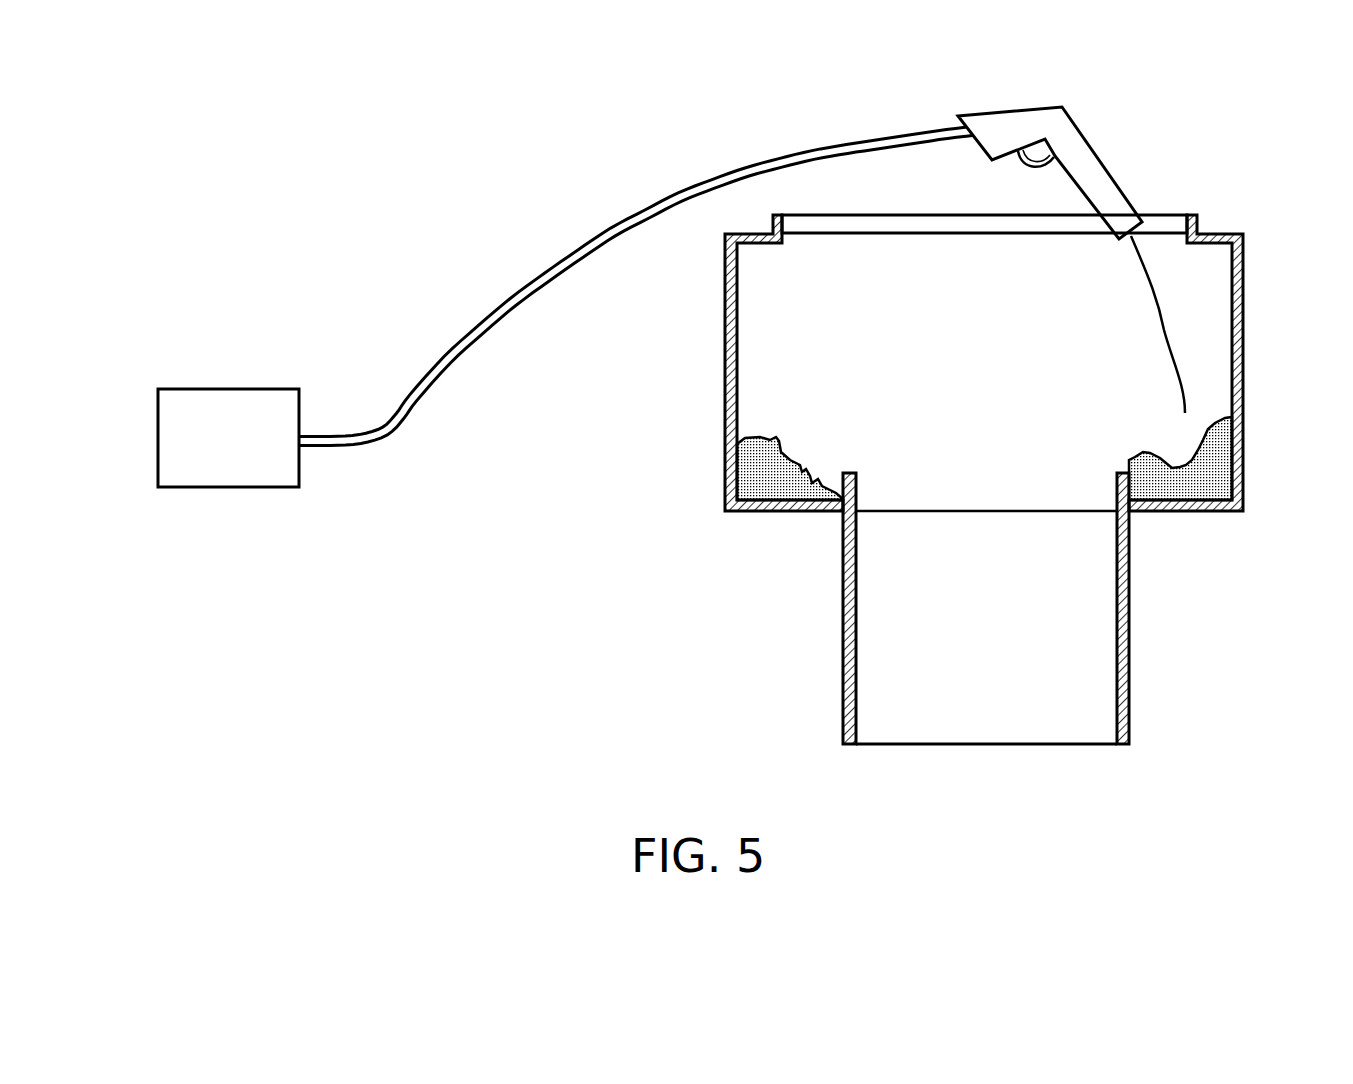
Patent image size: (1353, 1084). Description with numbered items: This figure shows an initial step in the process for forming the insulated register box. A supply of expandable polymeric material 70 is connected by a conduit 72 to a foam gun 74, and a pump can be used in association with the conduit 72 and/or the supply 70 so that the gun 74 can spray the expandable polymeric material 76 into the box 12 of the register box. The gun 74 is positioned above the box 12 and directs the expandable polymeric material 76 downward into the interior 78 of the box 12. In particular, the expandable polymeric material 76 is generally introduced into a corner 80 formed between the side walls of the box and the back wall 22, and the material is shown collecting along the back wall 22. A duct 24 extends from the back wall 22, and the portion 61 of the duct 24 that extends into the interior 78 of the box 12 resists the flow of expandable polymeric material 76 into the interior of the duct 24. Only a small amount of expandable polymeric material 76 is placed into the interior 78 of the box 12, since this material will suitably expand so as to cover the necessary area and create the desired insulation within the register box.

The box 12 is at (1245, 382).
The back wall 22 is at (1157, 510).
The duct 24 is at (1129, 661).
The portion of the duct 61 is at (1114, 478).
The supply of expandable polymeric material 70 is at (233, 388).
The conduit 72 is at (412, 392).
The foam gun 74 is at (1020, 107).
The expandable polymeric material 76 is at (1160, 316).
The interior of the box 78 is at (948, 366).
The corner 80 is at (1217, 487).